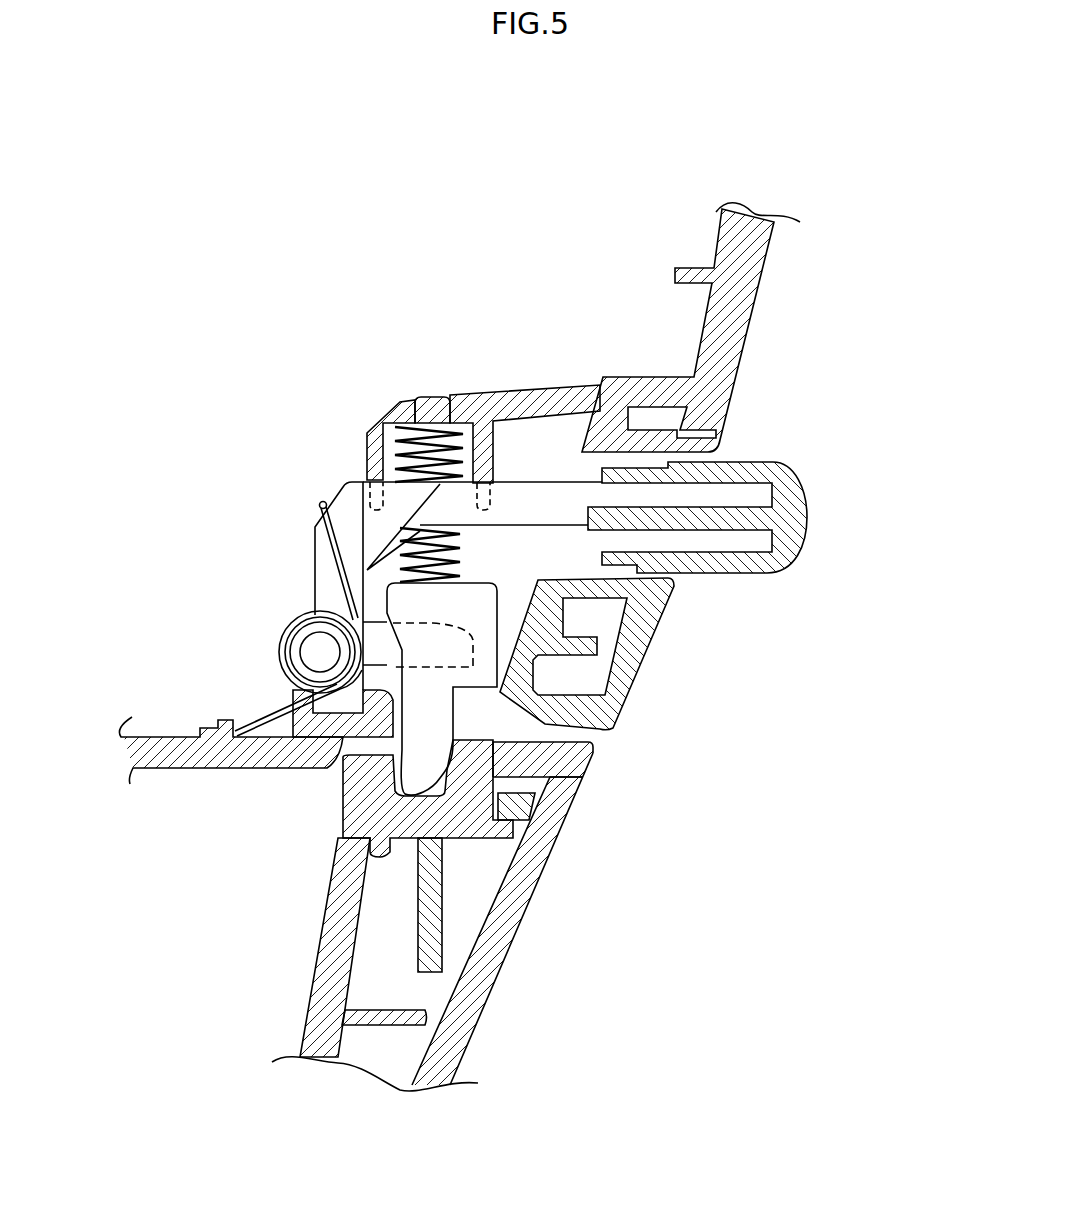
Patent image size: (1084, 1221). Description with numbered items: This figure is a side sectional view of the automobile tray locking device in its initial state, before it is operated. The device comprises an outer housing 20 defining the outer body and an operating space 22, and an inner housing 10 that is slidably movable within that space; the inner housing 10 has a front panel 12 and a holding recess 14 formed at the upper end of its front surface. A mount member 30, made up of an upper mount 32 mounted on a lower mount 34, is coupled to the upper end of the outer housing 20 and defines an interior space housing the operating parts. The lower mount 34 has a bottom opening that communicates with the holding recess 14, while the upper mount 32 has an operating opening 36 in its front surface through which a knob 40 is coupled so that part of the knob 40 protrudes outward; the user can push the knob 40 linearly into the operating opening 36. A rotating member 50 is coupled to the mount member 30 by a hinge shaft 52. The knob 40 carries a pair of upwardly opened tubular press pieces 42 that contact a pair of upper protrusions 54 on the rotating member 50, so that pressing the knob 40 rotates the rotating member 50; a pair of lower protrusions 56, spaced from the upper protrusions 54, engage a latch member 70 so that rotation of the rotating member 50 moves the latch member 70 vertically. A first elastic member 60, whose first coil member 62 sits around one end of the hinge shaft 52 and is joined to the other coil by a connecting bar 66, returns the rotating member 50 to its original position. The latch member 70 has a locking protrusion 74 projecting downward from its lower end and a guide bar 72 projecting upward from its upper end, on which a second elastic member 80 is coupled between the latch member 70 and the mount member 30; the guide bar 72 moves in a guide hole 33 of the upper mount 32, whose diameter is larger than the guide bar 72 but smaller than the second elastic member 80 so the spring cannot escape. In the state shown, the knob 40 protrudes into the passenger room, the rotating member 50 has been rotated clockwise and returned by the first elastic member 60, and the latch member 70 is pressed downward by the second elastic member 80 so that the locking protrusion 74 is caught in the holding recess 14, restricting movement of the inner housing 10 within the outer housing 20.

The inner housing 10 is at (486, 915).
The front panel 12 is at (515, 913).
The holding recess 14 is at (560, 752).
The outer housing 20 is at (153, 722).
The operating space 22 is at (220, 823).
The mount member 30 is at (573, 299).
The upper mount 32 is at (370, 432).
The guide hole 33 is at (413, 393).
The lower mount 34 is at (636, 388).
The operating opening 36 is at (660, 578).
The knob 40 is at (822, 518).
The press pieces 42 is at (523, 507).
The rotating member 50 is at (307, 684).
The hinge shaft 52 is at (318, 650).
The upper protrusions 54 is at (400, 488).
The lower protrusions 56 is at (385, 655).
The first elastic member 60 is at (277, 647).
The first coil member 62 is at (280, 687).
The connecting bar 66 is at (321, 508).
The latch member 70 is at (566, 689).
The guide bar 72 is at (432, 412).
The locking protrusion 74 is at (417, 750).
The second elastic member 80 is at (392, 467).